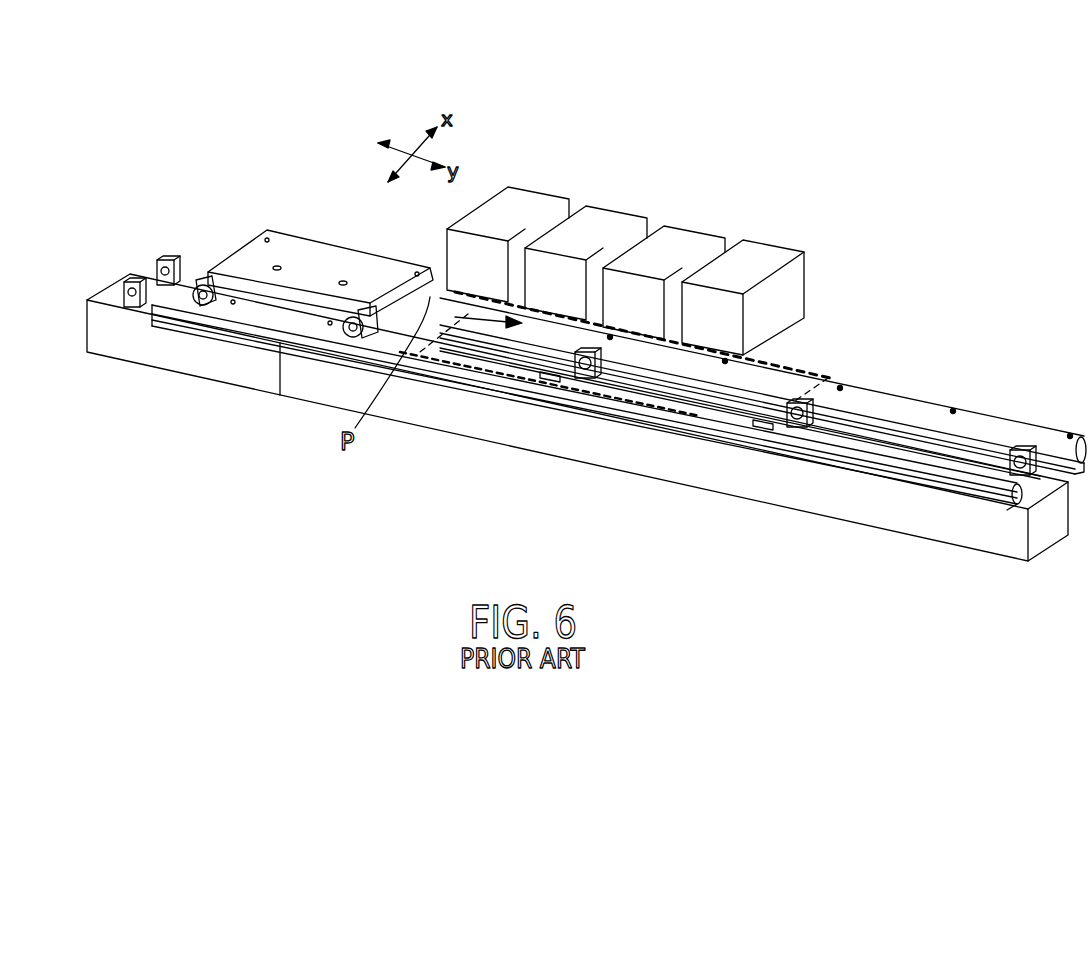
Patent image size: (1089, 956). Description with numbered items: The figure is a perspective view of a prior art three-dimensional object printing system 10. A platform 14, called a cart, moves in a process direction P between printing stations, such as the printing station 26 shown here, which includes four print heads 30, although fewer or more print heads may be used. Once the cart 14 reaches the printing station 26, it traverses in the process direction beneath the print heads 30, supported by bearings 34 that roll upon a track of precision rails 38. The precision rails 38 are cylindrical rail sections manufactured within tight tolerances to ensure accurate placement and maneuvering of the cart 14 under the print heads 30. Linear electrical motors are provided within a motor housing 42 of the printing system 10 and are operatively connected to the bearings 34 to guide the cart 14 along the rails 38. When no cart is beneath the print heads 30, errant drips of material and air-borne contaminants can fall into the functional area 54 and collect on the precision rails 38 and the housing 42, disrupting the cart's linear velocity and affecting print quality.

The three-dimensional object printing system 10 is at (838, 146).
The platform 14 is at (313, 252).
The printing station 26 is at (847, 203).
The print heads 30 is at (630, 218).
The bearings 34 is at (208, 283).
The precision rails 38 is at (887, 397).
The motor housing 42 is at (996, 538).
The functional area 54 is at (677, 420).